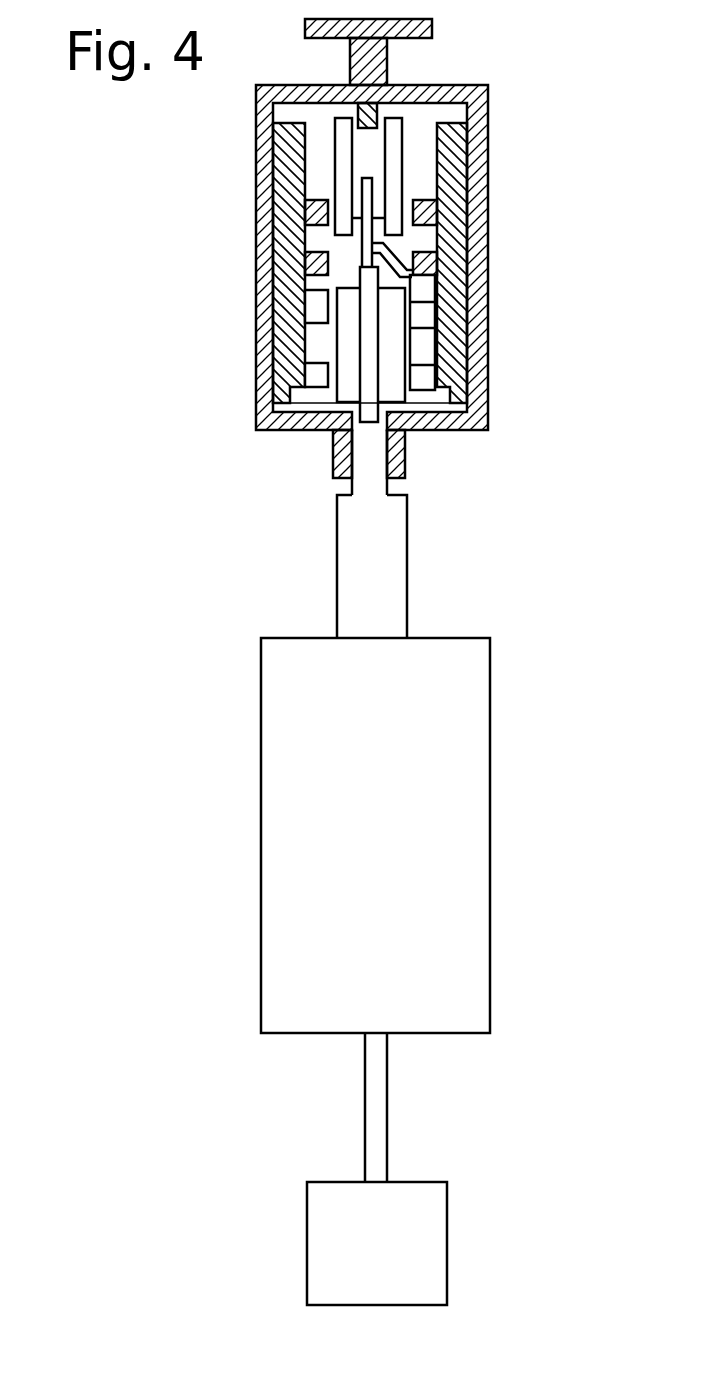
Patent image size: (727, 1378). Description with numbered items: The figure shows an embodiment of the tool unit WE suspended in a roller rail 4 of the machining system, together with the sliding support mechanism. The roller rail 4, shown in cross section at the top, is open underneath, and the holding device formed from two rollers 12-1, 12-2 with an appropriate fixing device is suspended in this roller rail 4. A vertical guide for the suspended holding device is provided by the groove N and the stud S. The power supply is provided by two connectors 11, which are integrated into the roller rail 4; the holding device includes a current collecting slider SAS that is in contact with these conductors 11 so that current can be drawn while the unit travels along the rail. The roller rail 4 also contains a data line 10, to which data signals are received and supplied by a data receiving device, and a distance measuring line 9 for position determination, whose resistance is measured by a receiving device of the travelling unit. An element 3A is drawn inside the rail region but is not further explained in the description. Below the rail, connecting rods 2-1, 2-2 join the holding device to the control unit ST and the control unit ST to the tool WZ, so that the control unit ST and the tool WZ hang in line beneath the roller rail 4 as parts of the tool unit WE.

The roller rail 4 is at (480, 140).
The stud S is at (355, 108).
The roller 12-2 is at (393, 144).
The roller 12-1 is at (346, 390).
The distance measuring line 9 is at (440, 213).
The data line 10 is at (435, 265).
The connectors 11 is at (430, 319).
The sensor element 3A is at (322, 309).
The groove N is at (385, 438).
The connecting rod 2-1 is at (352, 552).
The connecting rod 2-2 is at (377, 1107).
The control unit ST is at (385, 845).
The tool WZ is at (395, 1258).
The tool unit WE is at (163, 686).
The current collecting slider SAS is at (417, 403).